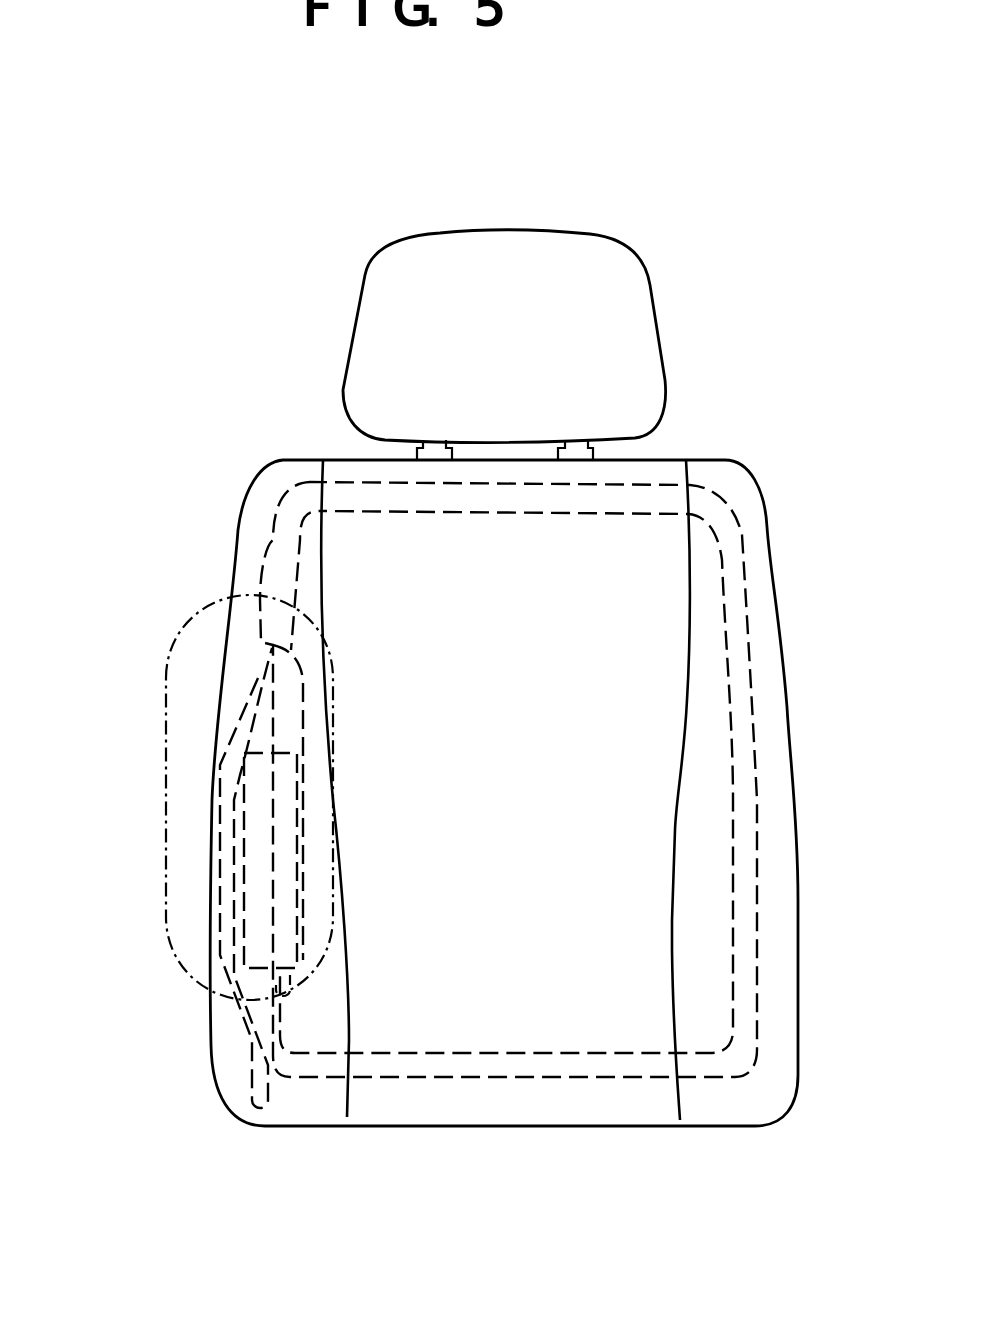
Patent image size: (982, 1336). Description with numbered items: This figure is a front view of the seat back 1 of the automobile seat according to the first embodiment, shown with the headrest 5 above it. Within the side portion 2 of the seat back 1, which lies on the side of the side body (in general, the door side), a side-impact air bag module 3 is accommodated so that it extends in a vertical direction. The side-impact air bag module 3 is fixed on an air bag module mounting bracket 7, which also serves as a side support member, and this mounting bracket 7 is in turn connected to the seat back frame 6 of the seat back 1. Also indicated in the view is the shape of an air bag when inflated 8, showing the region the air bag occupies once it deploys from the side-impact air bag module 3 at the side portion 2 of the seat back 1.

The seat back 1 is at (605, 603).
The side portion 2 is at (258, 488).
The side-impact air bag module 3 is at (290, 838).
The headrest 5 is at (623, 303).
The seat back frame 6 is at (755, 716).
The air bag module mounting bracket 7 is at (225, 902).
The shape of an air bag when inflated 8 is at (167, 705).